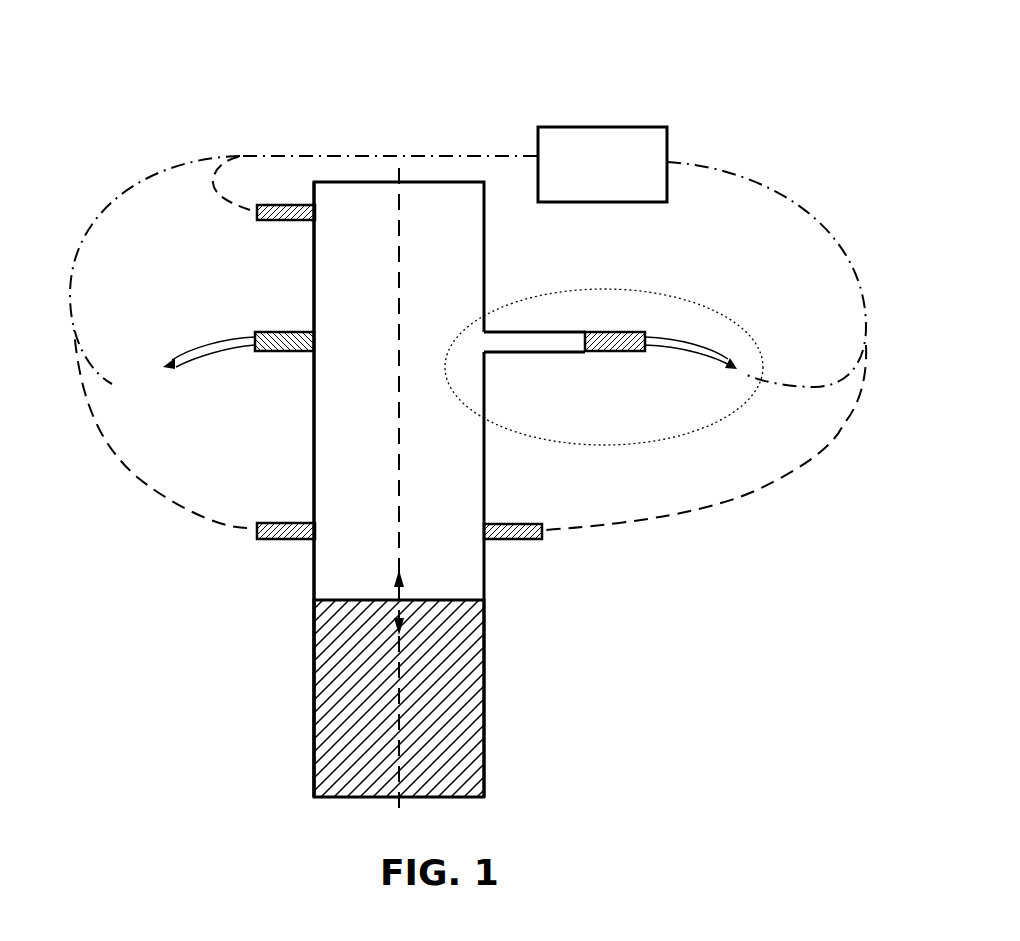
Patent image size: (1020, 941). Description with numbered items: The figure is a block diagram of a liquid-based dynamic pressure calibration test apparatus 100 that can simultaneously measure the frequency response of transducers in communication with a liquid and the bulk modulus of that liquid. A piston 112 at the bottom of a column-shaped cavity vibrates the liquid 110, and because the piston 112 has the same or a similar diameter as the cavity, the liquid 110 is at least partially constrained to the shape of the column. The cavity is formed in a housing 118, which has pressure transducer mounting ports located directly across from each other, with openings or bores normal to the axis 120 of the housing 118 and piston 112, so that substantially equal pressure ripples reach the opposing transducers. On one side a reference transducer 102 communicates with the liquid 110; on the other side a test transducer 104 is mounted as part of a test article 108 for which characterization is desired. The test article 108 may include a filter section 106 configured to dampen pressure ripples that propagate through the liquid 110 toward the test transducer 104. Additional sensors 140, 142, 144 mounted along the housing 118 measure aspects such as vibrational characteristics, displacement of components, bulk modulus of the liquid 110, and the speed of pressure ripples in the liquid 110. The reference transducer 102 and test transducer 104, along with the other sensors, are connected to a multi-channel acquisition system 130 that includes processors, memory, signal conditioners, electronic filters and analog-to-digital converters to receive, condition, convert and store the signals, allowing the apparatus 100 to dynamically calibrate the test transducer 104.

The liquid-based dynamic pressure calibration test apparatus 100 is at (466, 84).
The reference transducer 102 is at (278, 320).
The test transducer 104 is at (617, 322).
The filter section 106 is at (535, 362).
The test article 108 is at (718, 432).
The liquid 110 is at (462, 505).
The piston 112 is at (494, 704).
The housing 118 is at (306, 414).
The axis 120 is at (399, 375).
The multi-channel acquisition system 130 is at (606, 168).
The additional sensor 140 is at (257, 531).
The additional sensor 142 is at (287, 204).
The additional sensor 144 is at (543, 531).